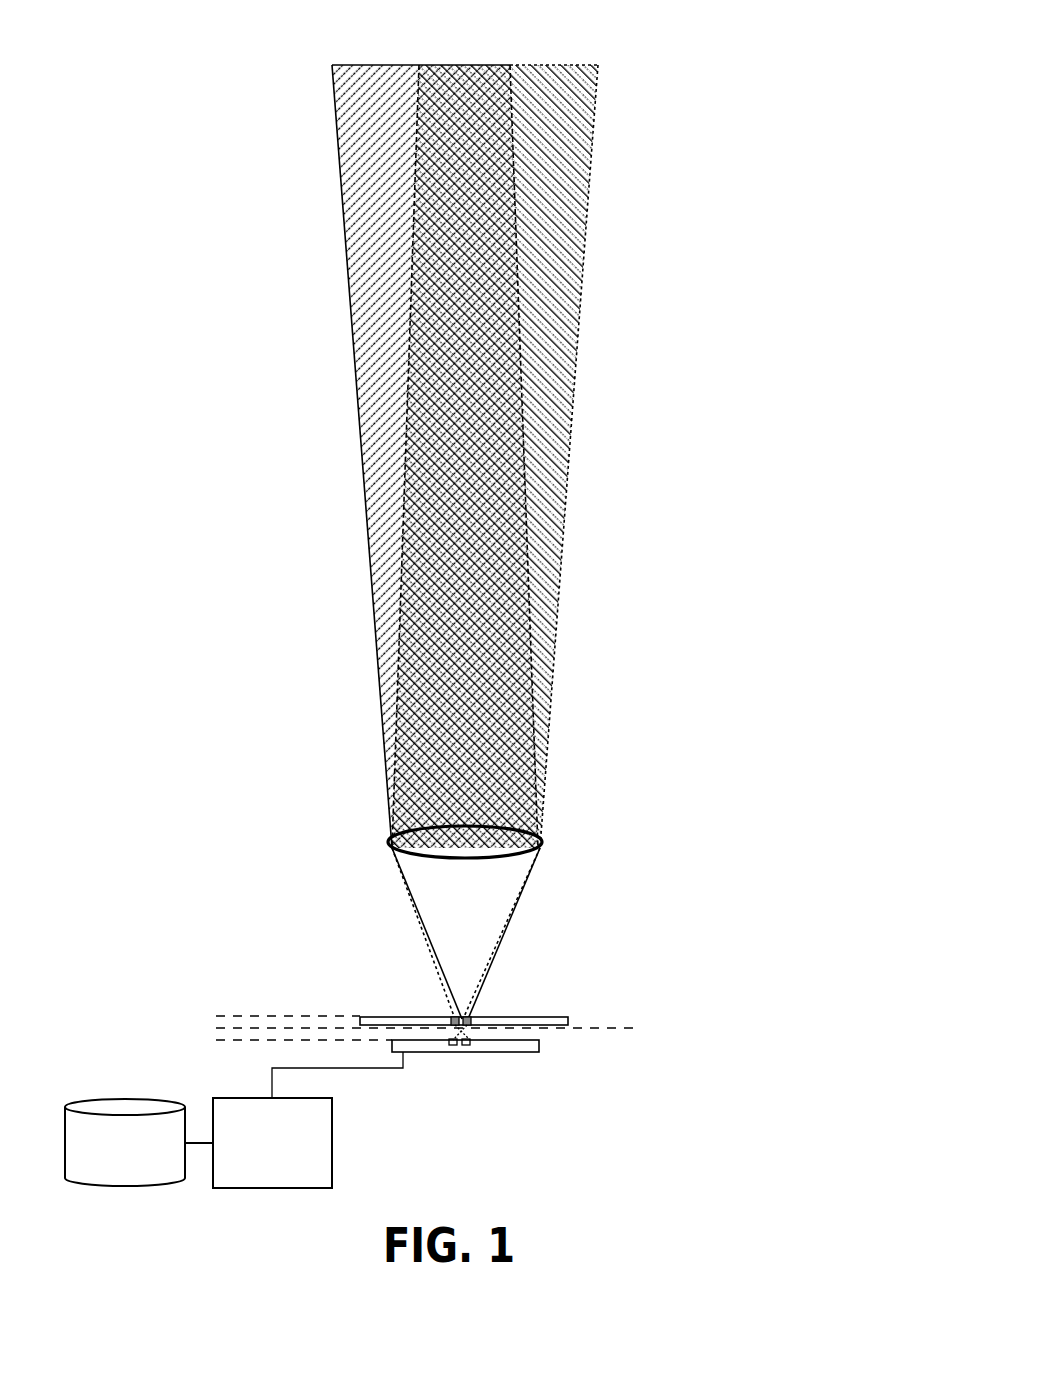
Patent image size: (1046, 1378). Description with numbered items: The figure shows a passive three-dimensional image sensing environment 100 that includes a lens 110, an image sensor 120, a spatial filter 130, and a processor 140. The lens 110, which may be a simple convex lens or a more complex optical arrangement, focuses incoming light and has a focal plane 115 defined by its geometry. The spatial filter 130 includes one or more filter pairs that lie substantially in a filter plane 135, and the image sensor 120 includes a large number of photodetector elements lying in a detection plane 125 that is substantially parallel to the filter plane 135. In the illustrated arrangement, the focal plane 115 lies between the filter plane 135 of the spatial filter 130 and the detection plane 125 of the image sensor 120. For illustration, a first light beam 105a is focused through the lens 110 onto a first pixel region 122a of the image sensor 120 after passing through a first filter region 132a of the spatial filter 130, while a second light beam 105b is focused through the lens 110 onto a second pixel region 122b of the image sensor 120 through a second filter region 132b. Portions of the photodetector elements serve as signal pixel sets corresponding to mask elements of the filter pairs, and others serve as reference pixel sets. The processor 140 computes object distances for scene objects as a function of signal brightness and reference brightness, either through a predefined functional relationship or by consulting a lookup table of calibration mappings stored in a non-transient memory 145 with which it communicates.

The passive 3D image sensing environment 100 is at (768, 68).
The first light beam 105a is at (553, 183).
The second light beam 105b is at (373, 185).
The lens 110 is at (466, 860).
The focal plane 115 is at (216, 1028).
The image sensor 120 is at (540, 1050).
The first pixel region 122a is at (455, 1053).
The second pixel region 122b is at (470, 1053).
The detection plane 125 is at (216, 1040).
The spatial filter 130 is at (375, 1015).
The first filter region 132a is at (455, 1016).
The second filter region 132b is at (468, 1016).
The filter plane 135 is at (216, 1016).
The processor 140 is at (272, 1143).
The non-transient memory 145 is at (139, 1142).